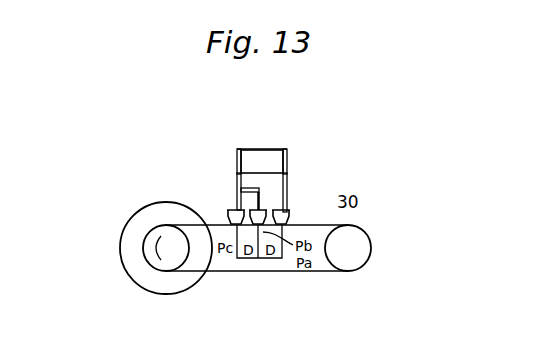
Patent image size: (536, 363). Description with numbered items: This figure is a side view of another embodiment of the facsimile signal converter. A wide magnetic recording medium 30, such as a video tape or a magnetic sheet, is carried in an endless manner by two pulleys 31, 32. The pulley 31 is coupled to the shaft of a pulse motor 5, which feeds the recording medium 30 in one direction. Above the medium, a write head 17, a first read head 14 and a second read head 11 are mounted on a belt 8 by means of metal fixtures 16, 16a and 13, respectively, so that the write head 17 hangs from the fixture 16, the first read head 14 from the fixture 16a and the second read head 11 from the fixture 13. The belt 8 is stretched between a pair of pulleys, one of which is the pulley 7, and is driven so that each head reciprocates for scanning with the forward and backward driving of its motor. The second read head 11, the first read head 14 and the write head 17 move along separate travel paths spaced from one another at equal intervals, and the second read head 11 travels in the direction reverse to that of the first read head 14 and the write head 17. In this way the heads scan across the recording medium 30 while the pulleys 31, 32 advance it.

The pulse motor 5 is at (163, 294).
The pulley 7 is at (267, 157).
The belt 8 is at (237, 150).
The second read head 11 is at (290, 213).
The metal fixture 13 is at (276, 204).
The first read head 14 is at (262, 200).
The metal fixture 16 is at (238, 172).
The metal fixture 16a is at (287, 175).
The write head 17 is at (231, 210).
The magnetic recording medium 30 is at (348, 202).
The pulley 31 is at (143, 248).
The pulley 32 is at (372, 250).